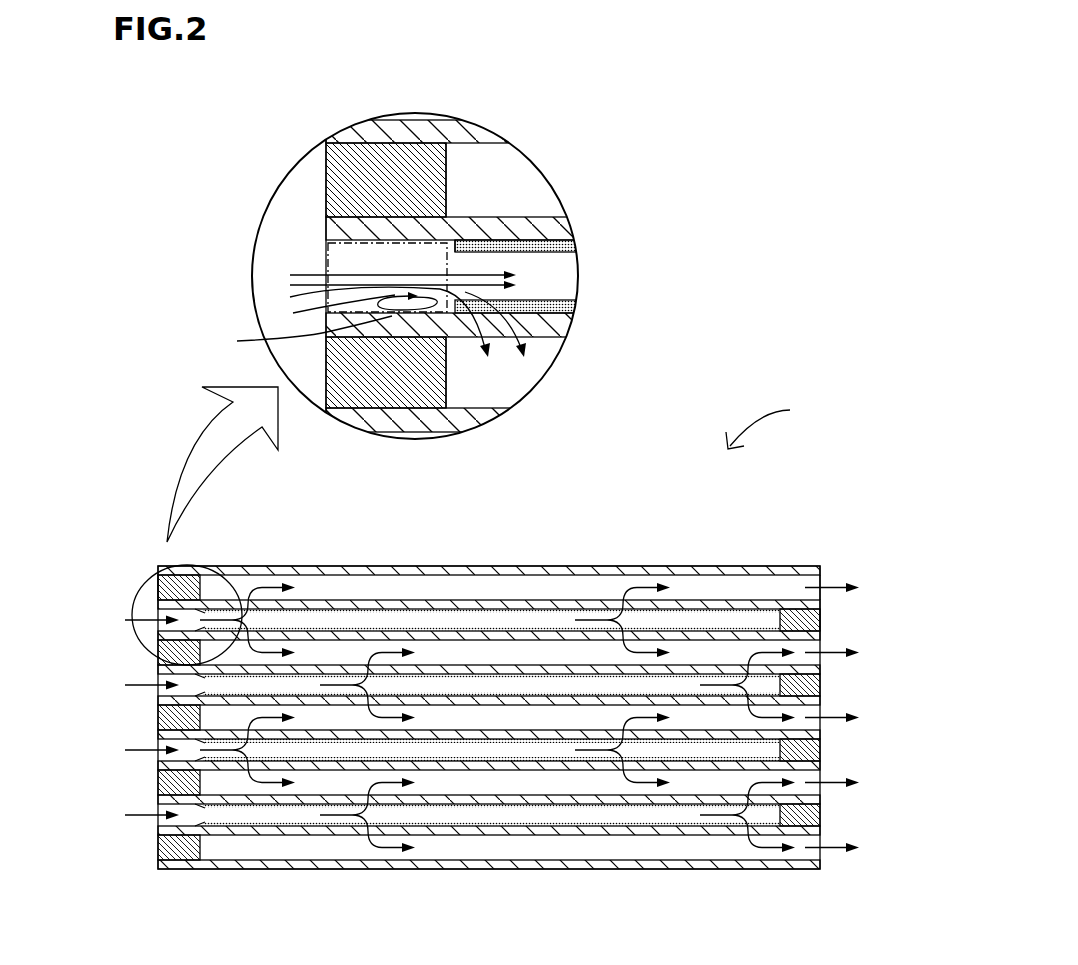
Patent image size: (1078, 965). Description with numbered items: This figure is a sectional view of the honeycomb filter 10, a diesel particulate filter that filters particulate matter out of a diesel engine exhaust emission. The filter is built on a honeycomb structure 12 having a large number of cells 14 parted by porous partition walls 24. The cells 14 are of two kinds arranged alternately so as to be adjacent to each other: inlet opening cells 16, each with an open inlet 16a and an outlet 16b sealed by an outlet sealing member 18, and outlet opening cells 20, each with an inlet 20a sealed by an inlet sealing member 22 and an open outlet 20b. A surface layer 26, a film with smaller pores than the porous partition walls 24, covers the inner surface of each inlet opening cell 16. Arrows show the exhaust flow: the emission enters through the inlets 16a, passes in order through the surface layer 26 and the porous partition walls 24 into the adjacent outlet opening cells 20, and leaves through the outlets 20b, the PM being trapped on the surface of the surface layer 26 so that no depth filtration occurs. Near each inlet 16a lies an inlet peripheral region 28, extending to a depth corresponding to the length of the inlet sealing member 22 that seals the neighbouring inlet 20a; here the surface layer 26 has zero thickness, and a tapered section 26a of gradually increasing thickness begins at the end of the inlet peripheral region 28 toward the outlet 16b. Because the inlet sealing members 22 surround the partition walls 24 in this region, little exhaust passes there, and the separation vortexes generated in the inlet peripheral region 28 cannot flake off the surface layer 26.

The honeycomb filter 10 is at (820, 411).
The honeycomb structure 12 is at (603, 566).
The cells 14 is at (440, 490).
The inlet opening cells 16 is at (422, 610).
The inlet 16a is at (158, 620).
The outlet 16b is at (822, 618).
The outlet sealing member 18 is at (795, 618).
The outlet opening cells 20 is at (383, 593).
The inlet 20a is at (158, 590).
The outlet 20b is at (822, 578).
The inlet sealing member 22 is at (185, 590).
The porous partition walls 24 is at (503, 607).
The surface layer 26 is at (553, 608).
The tapered section 26a is at (465, 243).
The inlet peripheral region 28 is at (328, 246).